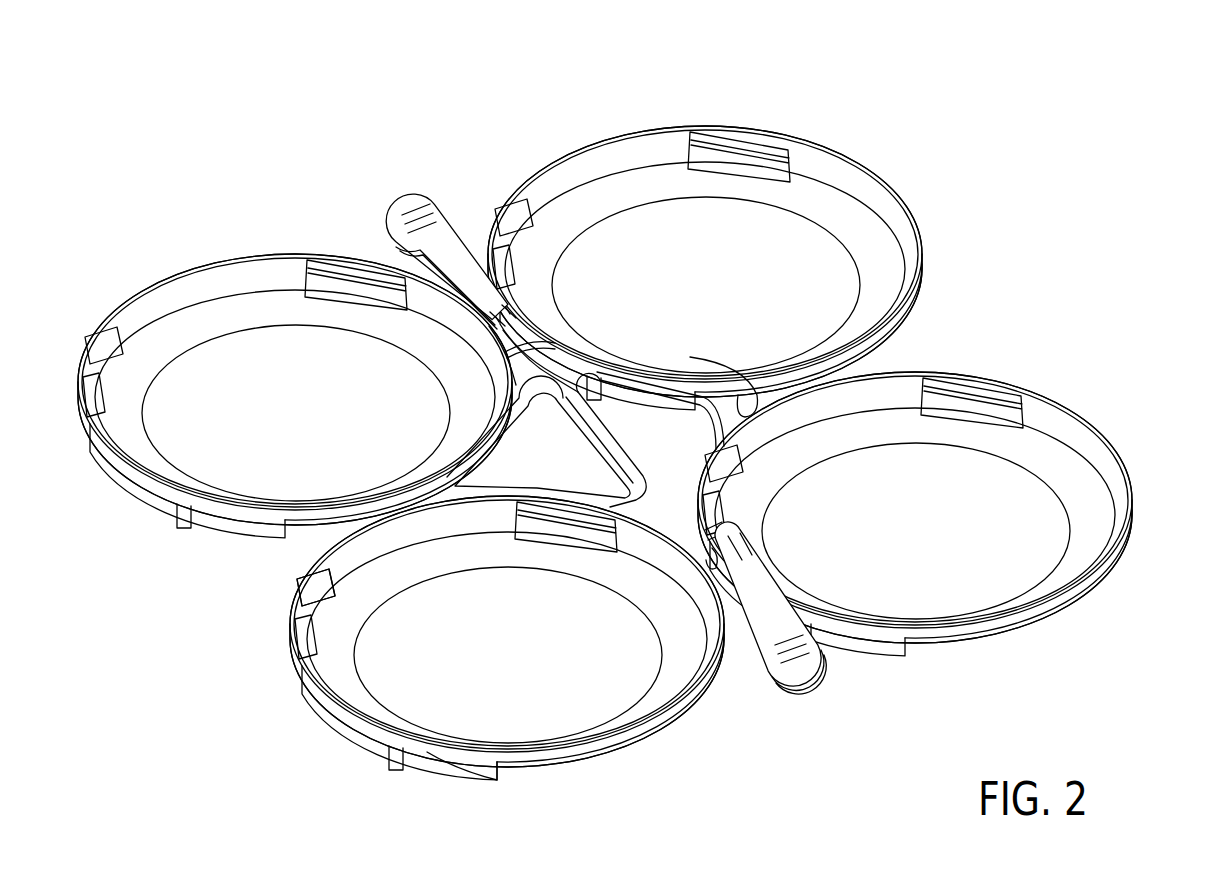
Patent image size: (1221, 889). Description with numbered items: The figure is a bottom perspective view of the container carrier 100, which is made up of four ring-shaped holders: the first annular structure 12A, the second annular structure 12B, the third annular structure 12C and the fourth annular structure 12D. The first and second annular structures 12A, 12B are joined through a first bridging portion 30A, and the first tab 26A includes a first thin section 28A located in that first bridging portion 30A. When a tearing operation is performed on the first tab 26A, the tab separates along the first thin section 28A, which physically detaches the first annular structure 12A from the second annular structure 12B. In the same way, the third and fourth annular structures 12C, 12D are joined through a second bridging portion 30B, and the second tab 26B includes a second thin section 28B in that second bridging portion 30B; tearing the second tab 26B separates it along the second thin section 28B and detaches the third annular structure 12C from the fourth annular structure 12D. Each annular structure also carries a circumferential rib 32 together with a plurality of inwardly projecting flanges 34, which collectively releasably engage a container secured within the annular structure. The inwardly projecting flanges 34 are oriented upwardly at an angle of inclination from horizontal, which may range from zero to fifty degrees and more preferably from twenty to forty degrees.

The container carrier 100 is at (1126, 92).
The first annular structure 12A is at (1100, 376).
The second annular structure 12B is at (447, 667).
The third annular structure 12C is at (808, 100).
The fourth annular structure 12D is at (178, 256).
The first tab 26A is at (795, 680).
The second tab 26B is at (408, 210).
The first thin section 28A is at (803, 627).
The second thin section 28B is at (500, 312).
The first bridging portion 30A is at (715, 570).
The second bridging portion 30B is at (492, 293).
The circumferential rib 32 is at (423, 752).
The inwardly projecting flanges 34 is at (300, 598).